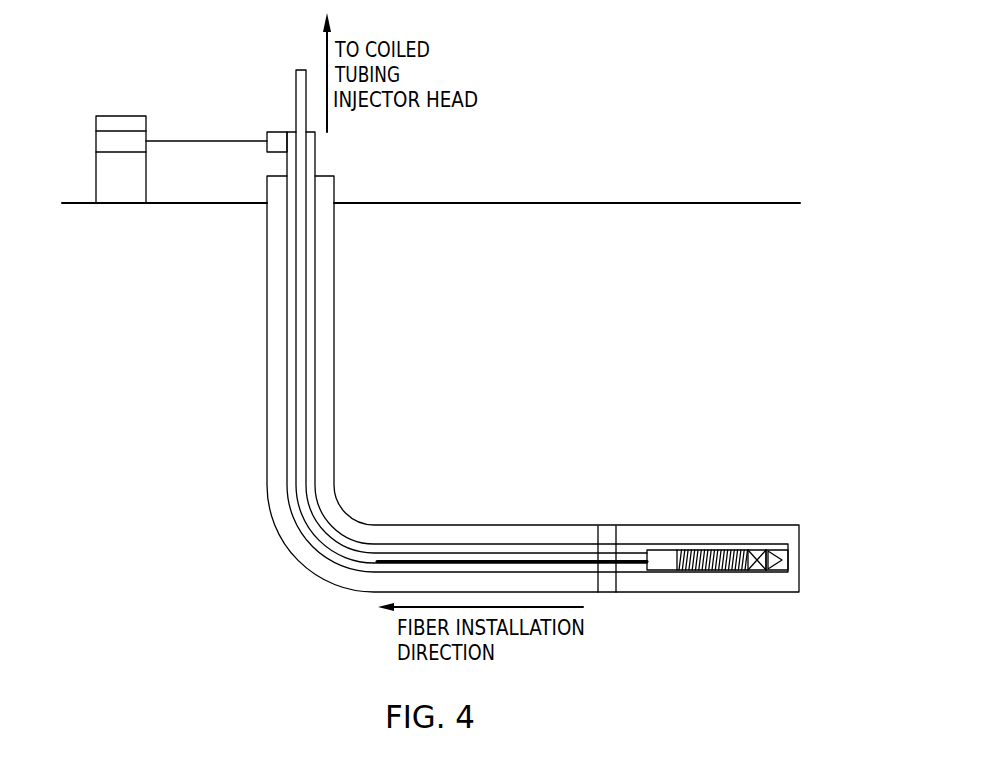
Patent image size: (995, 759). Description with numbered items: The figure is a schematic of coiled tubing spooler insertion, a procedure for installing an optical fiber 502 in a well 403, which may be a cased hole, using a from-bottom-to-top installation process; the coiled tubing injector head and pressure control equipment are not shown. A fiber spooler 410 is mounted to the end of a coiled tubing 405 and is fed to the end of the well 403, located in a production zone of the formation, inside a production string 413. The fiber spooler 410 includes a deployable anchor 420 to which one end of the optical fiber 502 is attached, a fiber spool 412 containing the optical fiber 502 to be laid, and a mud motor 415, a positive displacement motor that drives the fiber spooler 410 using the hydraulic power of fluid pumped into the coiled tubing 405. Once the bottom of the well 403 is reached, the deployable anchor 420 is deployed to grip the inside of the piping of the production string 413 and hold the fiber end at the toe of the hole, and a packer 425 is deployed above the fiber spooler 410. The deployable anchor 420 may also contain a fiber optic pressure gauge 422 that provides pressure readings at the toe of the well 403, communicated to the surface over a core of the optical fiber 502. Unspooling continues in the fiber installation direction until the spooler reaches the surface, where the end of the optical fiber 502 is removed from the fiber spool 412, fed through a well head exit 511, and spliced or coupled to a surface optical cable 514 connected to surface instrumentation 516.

The well 403 is at (334, 328).
The coiled tubing 405 is at (452, 555).
The fiber spooler 410 is at (742, 452).
The fiber spool 412 is at (722, 547).
The production string 413 is at (315, 157).
The mud motor 415 is at (663, 562).
The deployable anchor 420 is at (757, 573).
The fiber optic pressure gauge 422 is at (781, 559).
The packer 425 is at (608, 593).
The optical fiber 502 is at (680, 548).
The well head exit 511 is at (278, 131).
The surface optical cable 514 is at (193, 142).
The surface instrumentation 516 is at (110, 145).